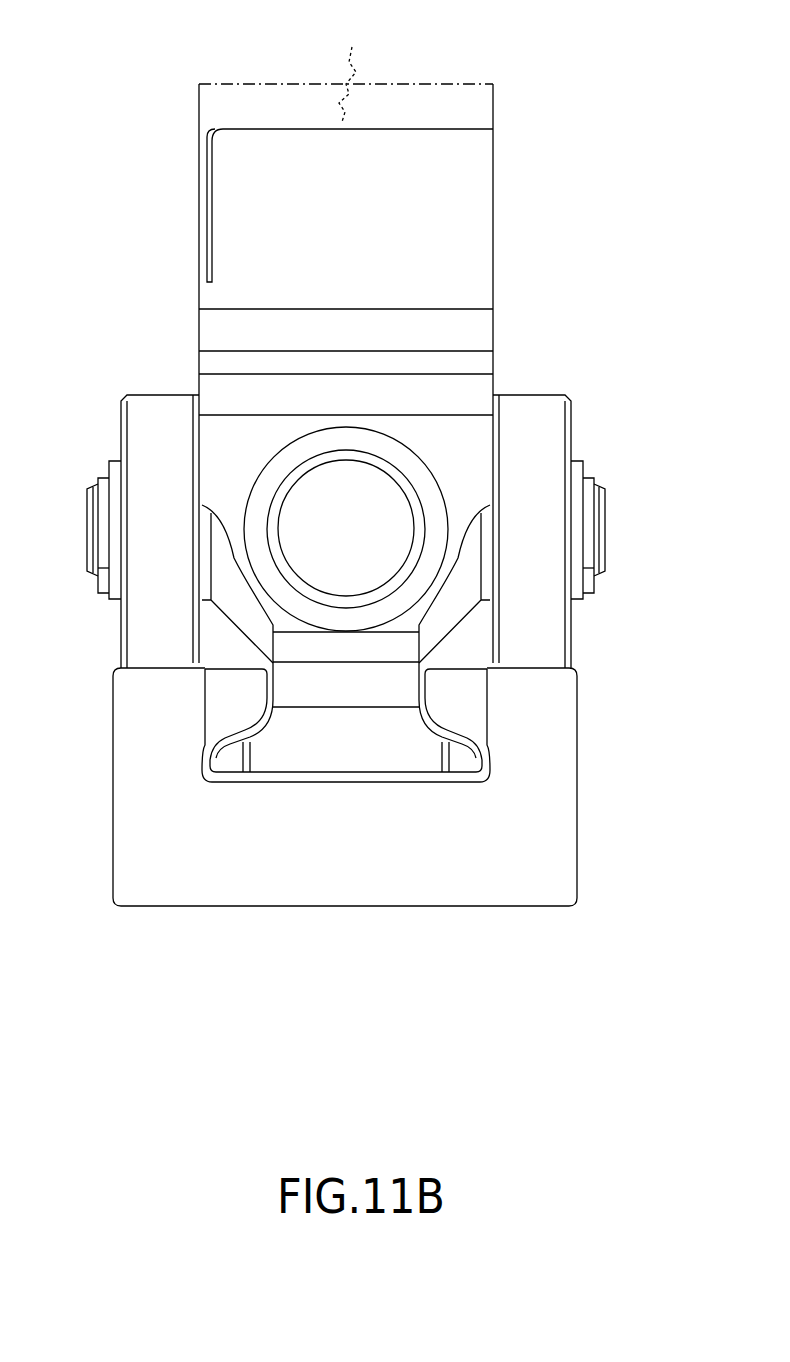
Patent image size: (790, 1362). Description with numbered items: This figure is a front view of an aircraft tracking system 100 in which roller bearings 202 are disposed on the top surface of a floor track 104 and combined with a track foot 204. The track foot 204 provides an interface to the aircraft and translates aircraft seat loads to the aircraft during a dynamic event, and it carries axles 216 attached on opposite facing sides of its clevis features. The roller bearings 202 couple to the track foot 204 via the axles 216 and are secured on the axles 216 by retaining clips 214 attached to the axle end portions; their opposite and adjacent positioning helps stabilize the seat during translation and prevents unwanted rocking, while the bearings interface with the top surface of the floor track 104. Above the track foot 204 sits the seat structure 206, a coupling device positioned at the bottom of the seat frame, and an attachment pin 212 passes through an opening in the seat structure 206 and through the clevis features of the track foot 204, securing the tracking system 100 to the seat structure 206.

The aircraft tracking system 100 is at (140, 36).
The floor track 104 is at (553, 785).
The roller bearing 202 is at (535, 427).
The track foot 204 is at (423, 755).
The seat structure 206 is at (478, 174).
The attachment pin 212 is at (322, 483).
The retaining clip 214 is at (590, 590).
The axle 216 is at (607, 532).